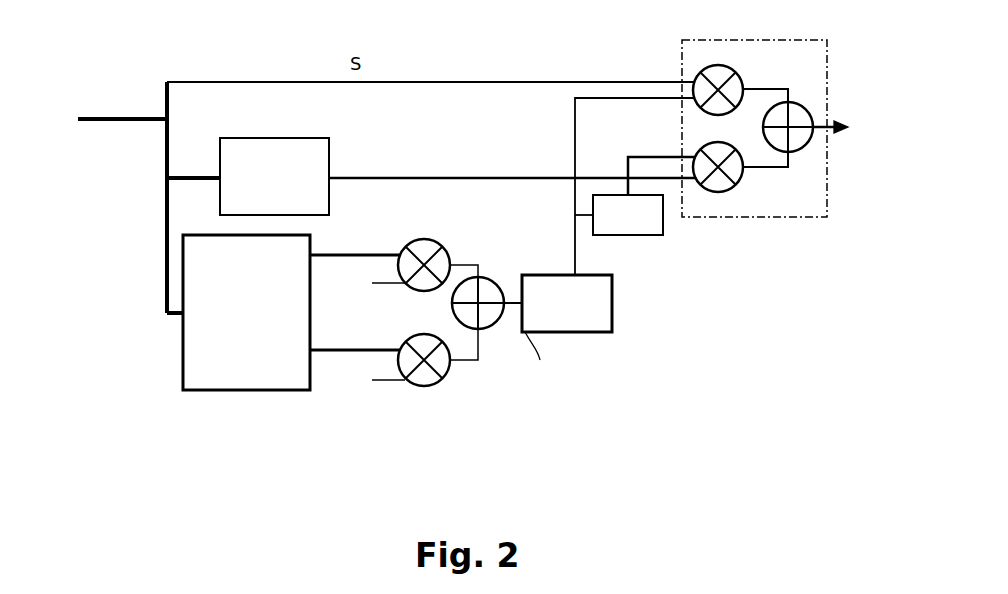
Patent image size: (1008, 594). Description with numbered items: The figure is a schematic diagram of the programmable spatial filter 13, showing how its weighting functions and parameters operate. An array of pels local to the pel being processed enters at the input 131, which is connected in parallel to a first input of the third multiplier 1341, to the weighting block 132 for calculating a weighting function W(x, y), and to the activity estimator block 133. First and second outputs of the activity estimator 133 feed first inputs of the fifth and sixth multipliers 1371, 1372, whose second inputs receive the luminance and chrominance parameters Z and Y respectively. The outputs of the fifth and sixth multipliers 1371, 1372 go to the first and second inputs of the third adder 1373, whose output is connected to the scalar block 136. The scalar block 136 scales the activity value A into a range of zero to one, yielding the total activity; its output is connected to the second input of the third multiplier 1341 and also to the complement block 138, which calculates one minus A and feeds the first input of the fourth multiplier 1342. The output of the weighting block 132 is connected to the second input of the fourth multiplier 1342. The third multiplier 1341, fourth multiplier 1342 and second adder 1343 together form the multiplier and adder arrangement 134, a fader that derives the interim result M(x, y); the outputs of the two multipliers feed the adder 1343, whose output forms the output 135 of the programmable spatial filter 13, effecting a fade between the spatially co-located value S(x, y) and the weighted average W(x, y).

The programmable spatial filter 13 is at (167, 76).
The input 131 is at (95, 146).
The weighting block 132 is at (458, 171).
The activity estimator block 133 is at (291, 312).
The multiplier and adder arrangement 134 is at (808, 205).
The output 135 is at (847, 133).
The scalar block 136 is at (608, 241).
The 1−A block 138 is at (650, 235).
The third multiplier 1341 is at (690, 80).
The fourth multiplier 1342 is at (730, 188).
The second adder 1343 is at (805, 150).
The fifth multiplier 1371 is at (445, 247).
The sixth multiplier 1372 is at (430, 386).
The third adder 1373 is at (485, 330).